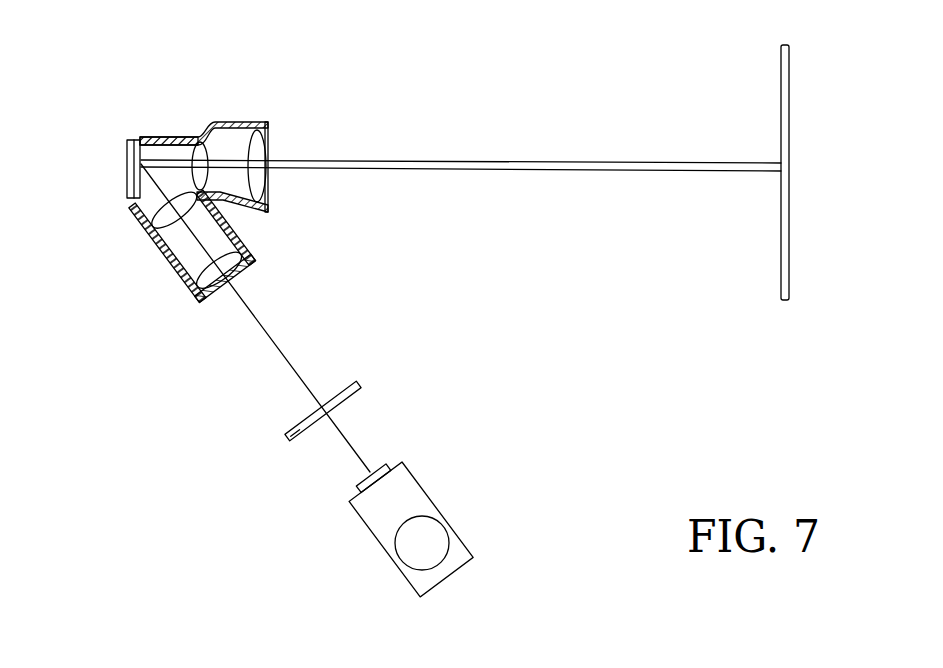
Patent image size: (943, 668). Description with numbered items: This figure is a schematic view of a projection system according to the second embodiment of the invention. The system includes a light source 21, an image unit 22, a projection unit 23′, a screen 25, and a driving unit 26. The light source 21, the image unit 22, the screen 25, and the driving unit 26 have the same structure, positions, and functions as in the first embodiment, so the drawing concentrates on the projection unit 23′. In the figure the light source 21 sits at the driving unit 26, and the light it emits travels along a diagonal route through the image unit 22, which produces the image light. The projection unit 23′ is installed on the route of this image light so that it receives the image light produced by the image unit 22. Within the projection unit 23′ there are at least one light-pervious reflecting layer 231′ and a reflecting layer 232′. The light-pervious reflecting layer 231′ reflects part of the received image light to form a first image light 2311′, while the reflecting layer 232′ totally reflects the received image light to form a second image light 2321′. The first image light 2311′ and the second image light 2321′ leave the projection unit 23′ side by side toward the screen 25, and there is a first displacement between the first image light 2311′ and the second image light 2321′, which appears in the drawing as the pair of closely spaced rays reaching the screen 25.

The light source 21 is at (427, 540).
The image unit 22 is at (288, 440).
The projection unit 23′ is at (245, 93).
The light-pervious reflecting layer 231′ is at (158, 138).
The reflecting layer 232′ is at (128, 147).
The first image light 2311′ is at (313, 162).
The second image light 2321′ is at (313, 170).
The screen 25 is at (788, 145).
The driving unit 26 is at (397, 495).